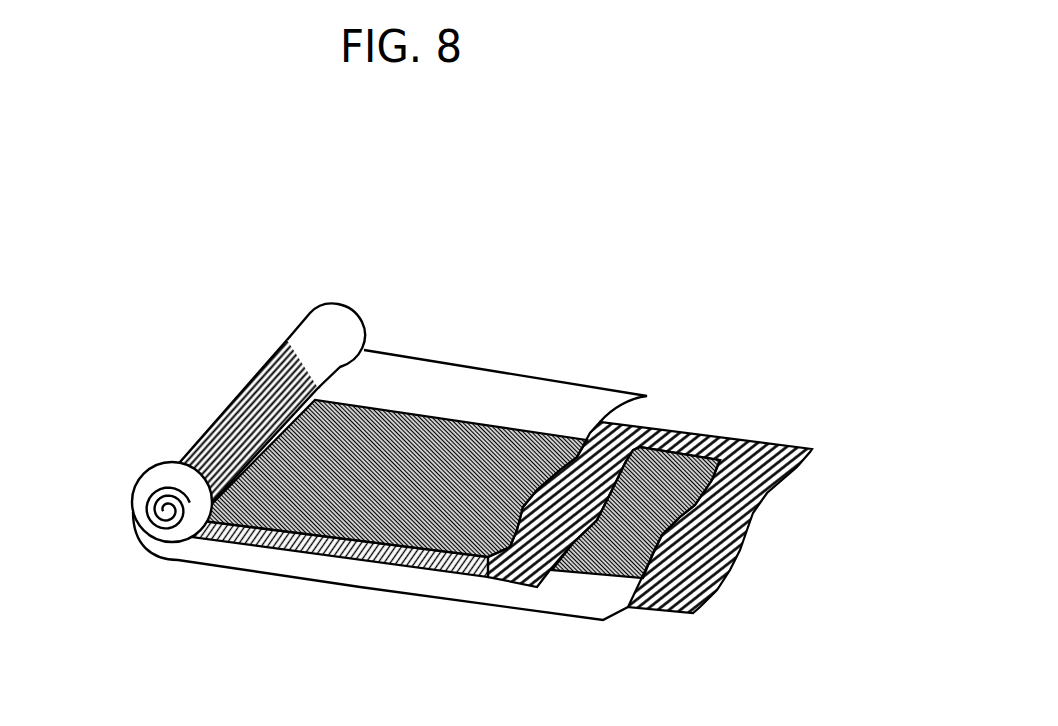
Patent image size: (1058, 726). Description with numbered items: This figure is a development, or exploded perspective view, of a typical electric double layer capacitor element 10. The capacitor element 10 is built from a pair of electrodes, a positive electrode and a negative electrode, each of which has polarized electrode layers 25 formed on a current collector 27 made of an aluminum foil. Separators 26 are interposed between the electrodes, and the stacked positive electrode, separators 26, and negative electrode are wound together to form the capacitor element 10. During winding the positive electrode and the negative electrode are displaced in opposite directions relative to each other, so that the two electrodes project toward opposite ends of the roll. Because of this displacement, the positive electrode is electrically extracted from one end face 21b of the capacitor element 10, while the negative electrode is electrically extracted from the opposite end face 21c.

The capacitor element 10 is at (254, 323).
The end face 21b is at (344, 333).
The end face 21c is at (188, 478).
The polarized electrode layer 25 is at (662, 535).
The separator 26 is at (258, 387).
The current collector 27 is at (582, 408).